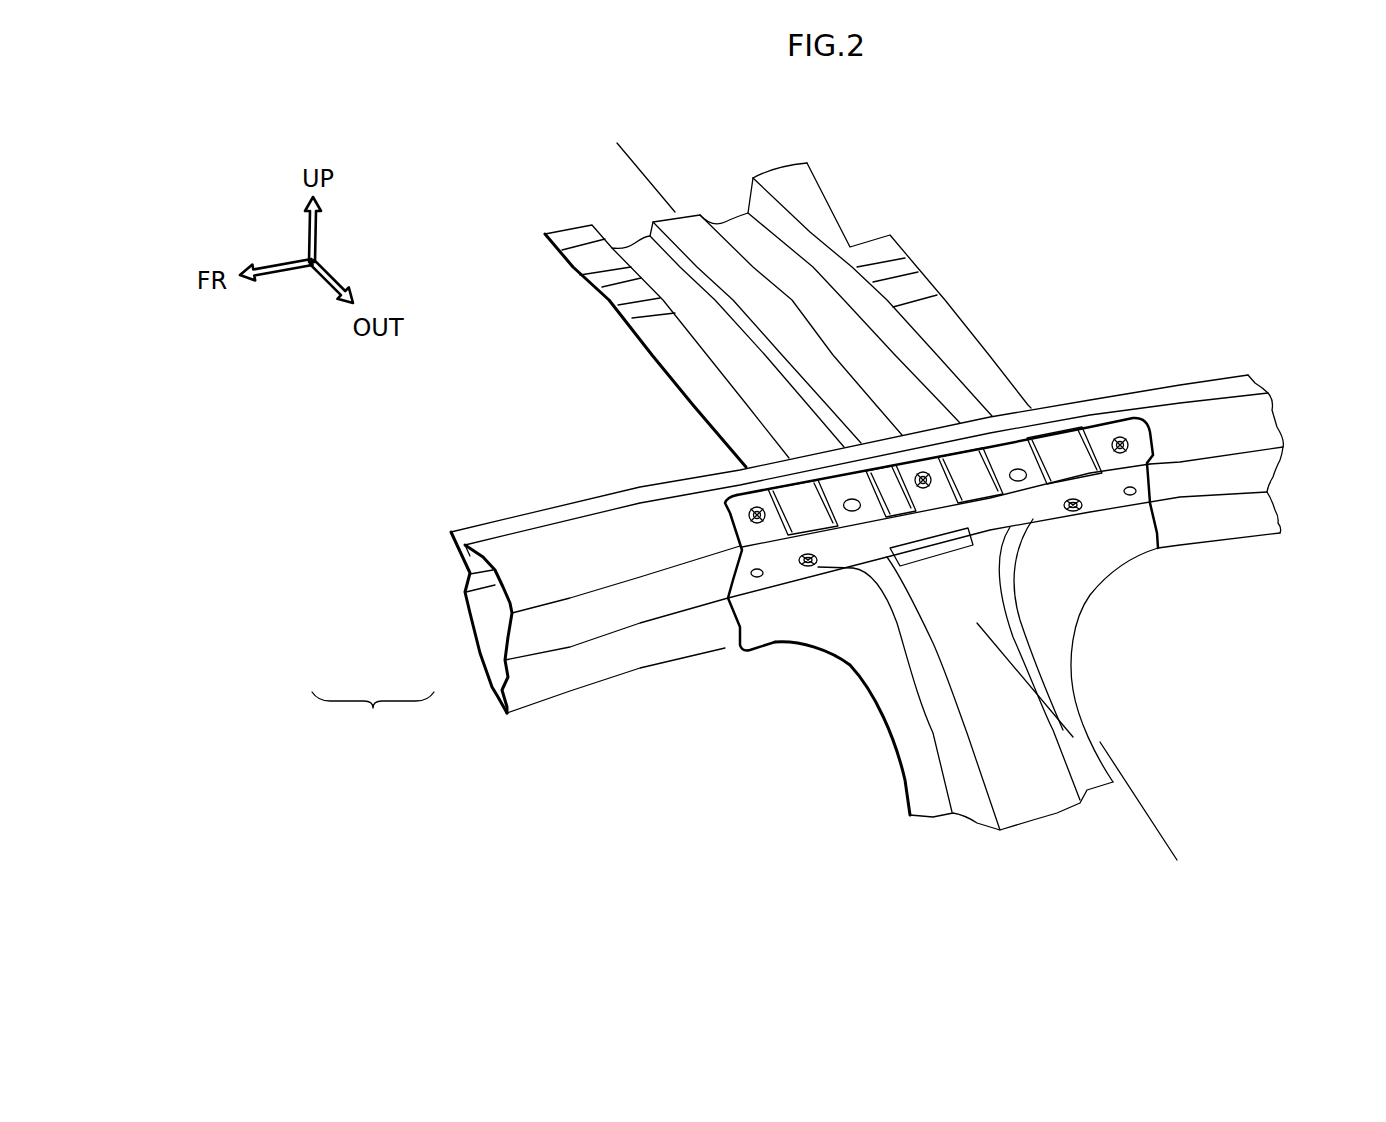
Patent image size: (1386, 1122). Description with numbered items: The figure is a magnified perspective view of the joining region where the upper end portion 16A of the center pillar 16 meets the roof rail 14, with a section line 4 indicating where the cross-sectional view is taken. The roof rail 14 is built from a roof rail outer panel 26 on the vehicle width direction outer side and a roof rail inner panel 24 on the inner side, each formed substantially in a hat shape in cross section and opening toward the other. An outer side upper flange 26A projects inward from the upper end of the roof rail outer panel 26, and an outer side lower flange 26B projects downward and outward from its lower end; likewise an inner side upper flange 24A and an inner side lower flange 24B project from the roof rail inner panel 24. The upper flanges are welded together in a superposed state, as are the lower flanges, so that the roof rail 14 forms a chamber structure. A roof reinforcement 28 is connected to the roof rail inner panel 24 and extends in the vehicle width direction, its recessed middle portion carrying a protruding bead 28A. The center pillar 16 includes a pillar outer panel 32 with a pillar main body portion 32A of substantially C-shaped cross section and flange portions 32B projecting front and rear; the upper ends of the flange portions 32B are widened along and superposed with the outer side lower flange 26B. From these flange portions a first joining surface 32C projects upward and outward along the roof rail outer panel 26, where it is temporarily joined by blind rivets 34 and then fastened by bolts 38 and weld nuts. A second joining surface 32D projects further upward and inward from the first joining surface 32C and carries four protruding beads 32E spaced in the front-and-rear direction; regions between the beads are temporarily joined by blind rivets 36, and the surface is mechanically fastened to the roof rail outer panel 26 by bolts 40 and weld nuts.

The section line 4 is at (606, 142).
The roof rail 14 is at (373, 718).
The center pillar 16 is at (1317, 719).
The upper end portion 16A is at (1164, 655).
The roof rail inner panel 24 is at (455, 619).
The inner side upper flange 24A is at (455, 540).
The inner side lower flange 24B is at (495, 712).
The roof rail outer panel 26 is at (497, 612).
The outer side upper flange 26A is at (466, 540).
The outer side lower flange 26B is at (517, 697).
The roof reinforcement 28 is at (929, 256).
The protruding bead 28A is at (768, 271).
The pillar outer panel 32 is at (1110, 752).
The pillar main body portion 32A is at (957, 770).
The flange portions 32B is at (895, 695).
The first joining surface 32C is at (1143, 477).
The second joining surface 32D is at (1176, 418).
The protruding beads 32E is at (790, 489).
The blind rivets 34 is at (760, 580).
The blind rivets 36 is at (850, 498).
The bolts 38 is at (808, 568).
The bolts 40 is at (745, 506).